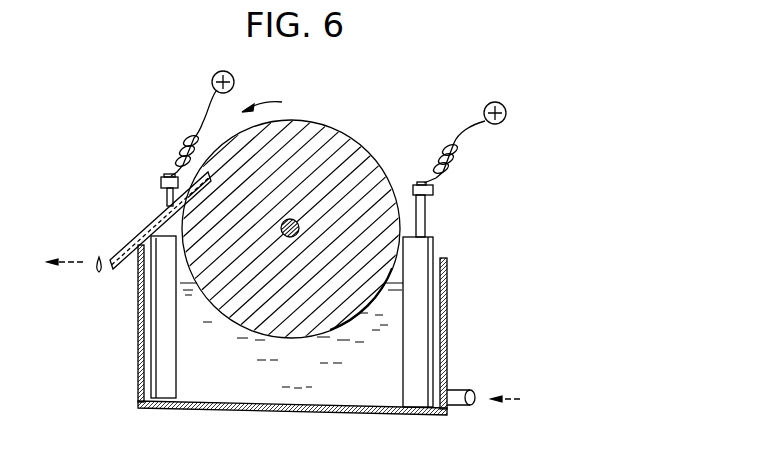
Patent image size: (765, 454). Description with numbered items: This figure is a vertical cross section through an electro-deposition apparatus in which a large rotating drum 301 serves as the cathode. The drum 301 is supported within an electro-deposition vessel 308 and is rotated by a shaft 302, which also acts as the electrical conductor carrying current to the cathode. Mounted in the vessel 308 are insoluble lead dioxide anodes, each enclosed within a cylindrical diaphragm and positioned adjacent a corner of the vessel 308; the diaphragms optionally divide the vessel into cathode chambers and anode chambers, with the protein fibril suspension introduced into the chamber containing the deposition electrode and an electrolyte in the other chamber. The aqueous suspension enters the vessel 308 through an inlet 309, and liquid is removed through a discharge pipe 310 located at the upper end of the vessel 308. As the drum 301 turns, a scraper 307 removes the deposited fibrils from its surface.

The rotating drum 301 is at (344, 130).
The shaft 302 is at (294, 219).
The scraper 307 is at (141, 237).
The electro-deposition vessel 308 is at (138, 372).
The inlet 309 is at (458, 388).
The discharge pipe 310 is at (104, 280).